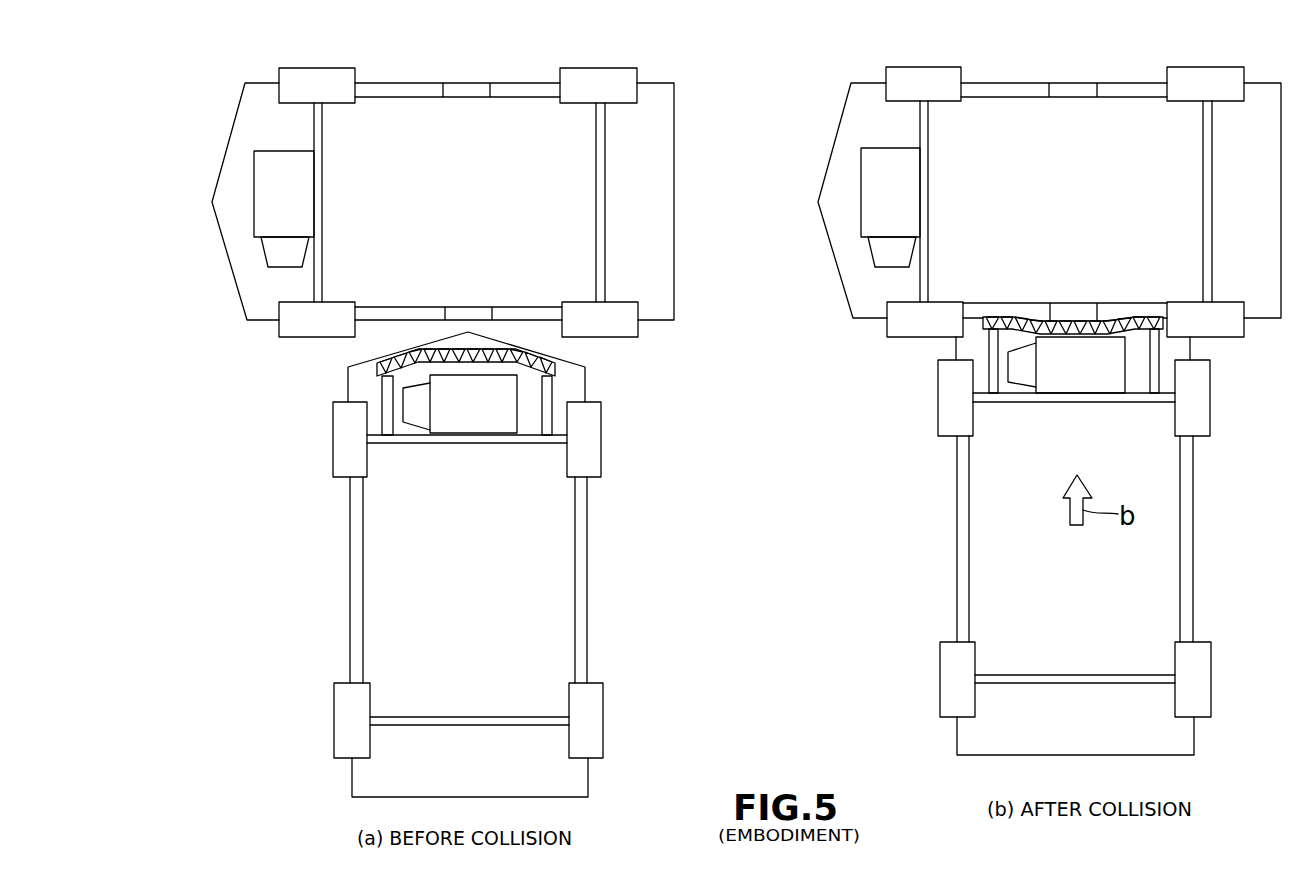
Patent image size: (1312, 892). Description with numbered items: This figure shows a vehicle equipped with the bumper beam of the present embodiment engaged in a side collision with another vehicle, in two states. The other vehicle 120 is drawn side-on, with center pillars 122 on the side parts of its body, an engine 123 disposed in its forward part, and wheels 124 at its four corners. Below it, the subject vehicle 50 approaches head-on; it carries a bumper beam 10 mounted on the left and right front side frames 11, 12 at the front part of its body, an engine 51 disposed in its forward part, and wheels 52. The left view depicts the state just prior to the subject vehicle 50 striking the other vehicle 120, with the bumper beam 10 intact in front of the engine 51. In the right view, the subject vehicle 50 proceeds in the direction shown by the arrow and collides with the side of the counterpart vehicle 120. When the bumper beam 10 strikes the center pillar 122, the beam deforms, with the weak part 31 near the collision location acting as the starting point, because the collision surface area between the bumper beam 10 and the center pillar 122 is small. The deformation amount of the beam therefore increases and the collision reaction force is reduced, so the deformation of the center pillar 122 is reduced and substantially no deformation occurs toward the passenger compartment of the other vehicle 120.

The other vehicle 120 is at (222, 135).
The center pillar 122 is at (466, 96).
The engine 123 is at (255, 205).
The wheels 124 is at (333, 78).
The bumper beam 10 is at (377, 366).
The front side frame 11 is at (387, 443).
The front side frame 12 is at (545, 443).
The weak part 31 is at (1052, 318).
The subject vehicle 50 is at (345, 572).
The engine 51 is at (466, 436).
The wheels 52 is at (336, 455).